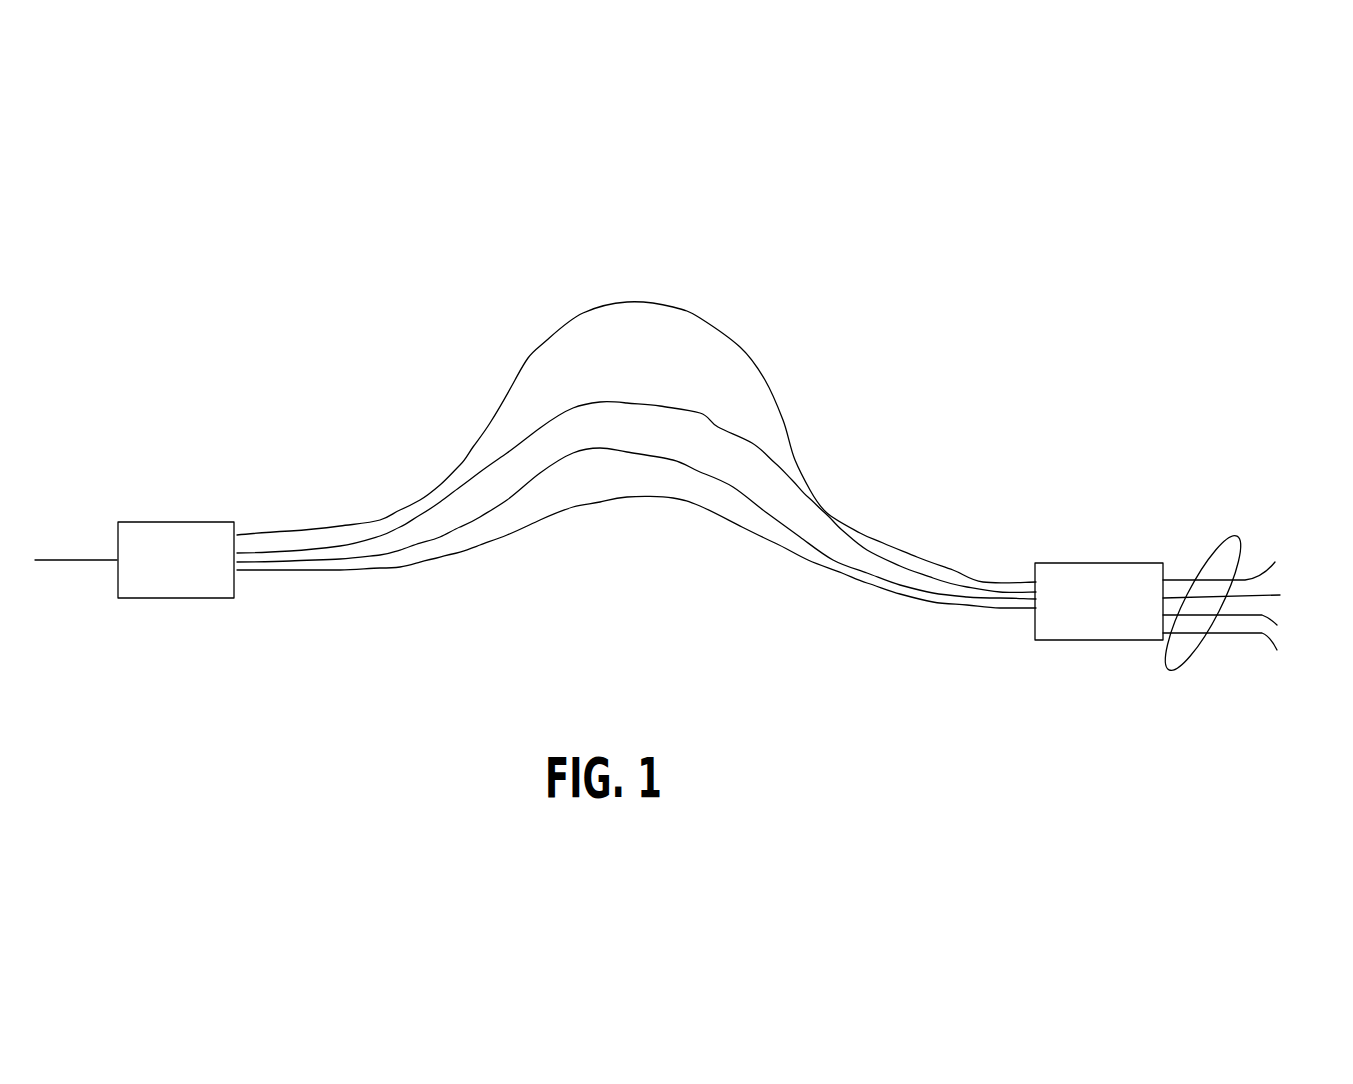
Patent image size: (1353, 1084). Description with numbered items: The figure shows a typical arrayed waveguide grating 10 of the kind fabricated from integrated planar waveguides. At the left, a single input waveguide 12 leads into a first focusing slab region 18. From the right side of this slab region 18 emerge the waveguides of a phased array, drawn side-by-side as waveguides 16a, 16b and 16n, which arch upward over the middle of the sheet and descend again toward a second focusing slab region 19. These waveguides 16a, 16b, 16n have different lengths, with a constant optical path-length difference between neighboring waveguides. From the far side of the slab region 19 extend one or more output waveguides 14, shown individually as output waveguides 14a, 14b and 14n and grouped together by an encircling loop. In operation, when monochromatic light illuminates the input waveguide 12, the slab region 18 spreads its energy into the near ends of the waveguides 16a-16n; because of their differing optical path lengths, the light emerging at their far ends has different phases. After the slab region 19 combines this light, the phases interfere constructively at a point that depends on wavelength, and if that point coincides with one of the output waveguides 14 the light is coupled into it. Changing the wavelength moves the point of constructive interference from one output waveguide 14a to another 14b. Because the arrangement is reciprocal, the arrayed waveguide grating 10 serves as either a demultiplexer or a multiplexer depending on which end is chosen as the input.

The arrayed waveguide grating 10 is at (722, 215).
The input waveguide 12 is at (83, 554).
The output waveguides 14 is at (1262, 492).
The output waveguide 14a is at (1284, 539).
The output waveguide 14b is at (1287, 576).
The output waveguide 14n is at (1273, 665).
The waveguide of the phased array 16a is at (636, 430).
The waveguide of the phased array 16b is at (636, 482).
The waveguide of the phased array 16n is at (636, 528).
The focusing slab region 18 is at (176, 560).
The focusing slab region 19 is at (1099, 601).